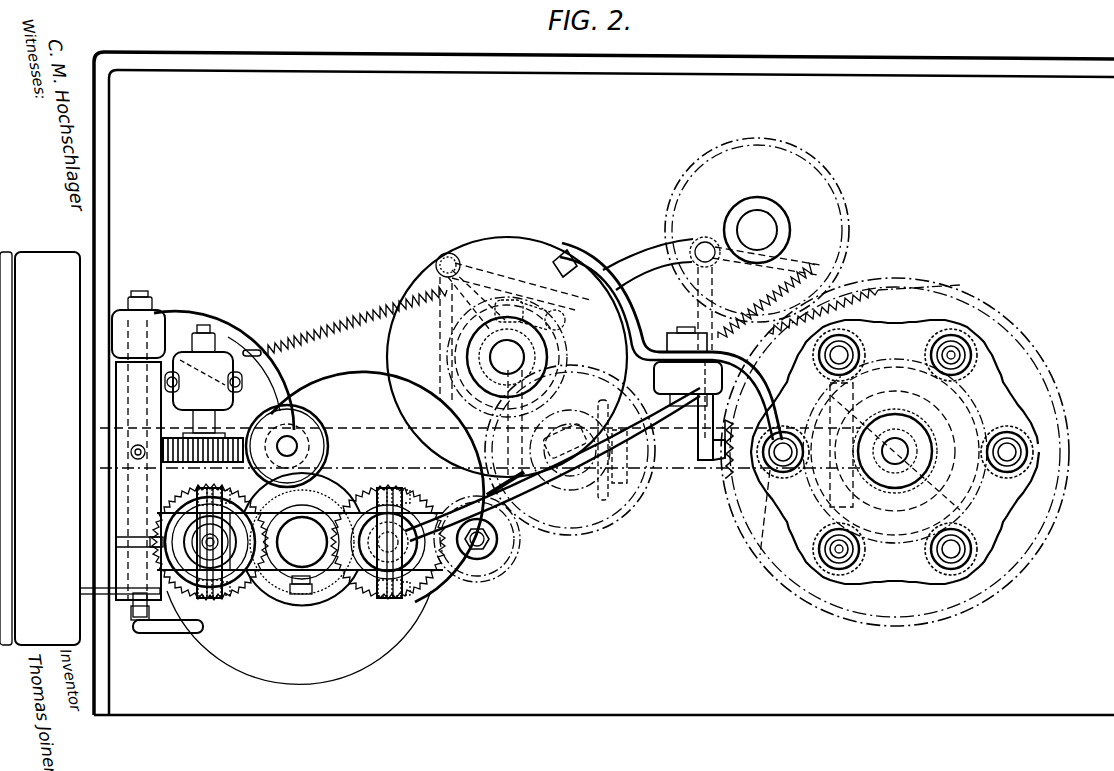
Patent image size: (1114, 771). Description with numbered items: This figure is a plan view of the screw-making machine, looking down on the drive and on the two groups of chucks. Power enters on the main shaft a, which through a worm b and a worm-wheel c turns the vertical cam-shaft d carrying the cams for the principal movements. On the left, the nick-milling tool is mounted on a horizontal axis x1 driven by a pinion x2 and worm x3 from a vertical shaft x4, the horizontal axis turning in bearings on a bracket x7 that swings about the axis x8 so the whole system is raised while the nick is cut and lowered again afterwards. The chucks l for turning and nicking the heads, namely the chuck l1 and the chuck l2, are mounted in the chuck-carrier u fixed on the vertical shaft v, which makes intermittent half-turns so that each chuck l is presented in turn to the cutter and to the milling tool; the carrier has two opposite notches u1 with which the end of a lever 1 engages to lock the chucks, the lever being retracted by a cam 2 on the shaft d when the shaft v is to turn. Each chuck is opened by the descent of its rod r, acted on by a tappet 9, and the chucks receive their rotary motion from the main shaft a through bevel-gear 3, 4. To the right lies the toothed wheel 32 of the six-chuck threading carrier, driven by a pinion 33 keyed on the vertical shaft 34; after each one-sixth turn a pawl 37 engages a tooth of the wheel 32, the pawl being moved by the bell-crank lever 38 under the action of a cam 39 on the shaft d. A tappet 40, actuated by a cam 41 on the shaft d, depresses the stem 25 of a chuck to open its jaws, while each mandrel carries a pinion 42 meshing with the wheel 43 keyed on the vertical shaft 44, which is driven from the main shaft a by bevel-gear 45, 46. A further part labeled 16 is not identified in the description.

The bracket x7 is at (125, 405).
The axis x8 is at (142, 357).
The horizontal axis x1 is at (202, 418).
The pinion x2 is at (240, 428).
The worm x3 is at (300, 422).
The vertical shaft x4 is at (291, 447).
The lever 1 is at (453, 487).
The chuck l is at (368, 580).
The vertical shaft v is at (302, 539).
The chuck-carrier u is at (270, 563).
The rod r is at (213, 553).
The chuck l1 is at (495, 578).
The notch u1 is at (452, 572).
The tappet 9 is at (408, 555).
The worm b is at (513, 463).
The cam 41 is at (508, 248).
The vertical cam-shaft d is at (512, 352).
The worm-wheel c is at (452, 355).
The cam 39 is at (448, 375).
The cam 2 is at (556, 335).
The bell-crank lever 38 is at (648, 230).
The nut 16 is at (694, 400).
The main shaft a is at (700, 436).
The pawl 37 is at (708, 453).
The pinion 33 is at (766, 230).
The vertical shaft 34 is at (757, 230).
The chuck l2 is at (590, 538).
The bevel-gear 3 is at (575, 420).
The bevel-gear 4 is at (600, 492).
The tappet 40 is at (776, 450).
The toothed wheel 32 is at (945, 288).
The vertical shaft 44 is at (905, 447).
The wheel 43 is at (967, 398).
The pinion 42 is at (980, 340).
The rod 25 is at (953, 352).
The bevel-gear 46 is at (770, 557).
The bevel-gear 45 is at (907, 513).